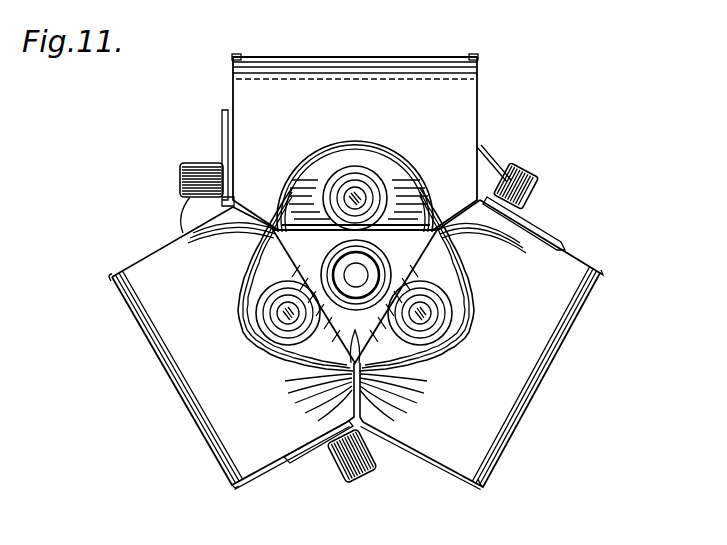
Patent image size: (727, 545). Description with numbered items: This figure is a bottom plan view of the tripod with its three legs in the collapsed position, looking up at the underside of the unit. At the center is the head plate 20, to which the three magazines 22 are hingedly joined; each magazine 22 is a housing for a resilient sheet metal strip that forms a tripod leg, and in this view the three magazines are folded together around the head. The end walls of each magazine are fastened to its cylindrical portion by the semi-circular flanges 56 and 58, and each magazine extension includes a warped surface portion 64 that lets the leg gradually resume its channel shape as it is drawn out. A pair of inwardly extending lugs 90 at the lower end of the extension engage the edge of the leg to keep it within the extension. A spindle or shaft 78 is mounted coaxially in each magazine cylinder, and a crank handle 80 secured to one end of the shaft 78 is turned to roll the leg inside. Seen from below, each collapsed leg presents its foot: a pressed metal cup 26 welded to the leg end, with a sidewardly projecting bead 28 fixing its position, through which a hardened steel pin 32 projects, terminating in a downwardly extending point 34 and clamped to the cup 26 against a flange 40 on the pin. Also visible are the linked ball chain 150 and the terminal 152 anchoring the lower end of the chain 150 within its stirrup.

The head plate 20 is at (495, 162).
The magazine 22 is at (340, 58).
The cup 26 is at (273, 293).
The bead 28 is at (448, 332).
The pin 32 is at (290, 322).
The point 34 is at (368, 208).
The flange 40 is at (362, 196).
The semi-circular flange 56 is at (112, 280).
The semi-circular flange 58 is at (222, 483).
The warped surface portion 64 is at (425, 377).
The spindle or shaft 78 is at (556, 237).
The crank handle 80 is at (222, 163).
The inwardly extending lugs 90 is at (358, 346).
The linked ball chain 150 is at (341, 258).
The terminal 152 is at (365, 276).